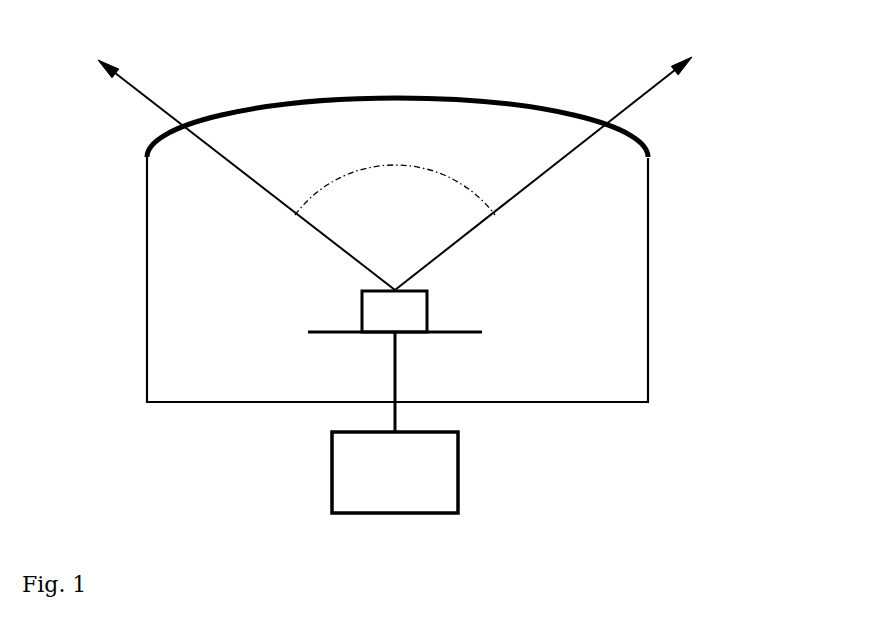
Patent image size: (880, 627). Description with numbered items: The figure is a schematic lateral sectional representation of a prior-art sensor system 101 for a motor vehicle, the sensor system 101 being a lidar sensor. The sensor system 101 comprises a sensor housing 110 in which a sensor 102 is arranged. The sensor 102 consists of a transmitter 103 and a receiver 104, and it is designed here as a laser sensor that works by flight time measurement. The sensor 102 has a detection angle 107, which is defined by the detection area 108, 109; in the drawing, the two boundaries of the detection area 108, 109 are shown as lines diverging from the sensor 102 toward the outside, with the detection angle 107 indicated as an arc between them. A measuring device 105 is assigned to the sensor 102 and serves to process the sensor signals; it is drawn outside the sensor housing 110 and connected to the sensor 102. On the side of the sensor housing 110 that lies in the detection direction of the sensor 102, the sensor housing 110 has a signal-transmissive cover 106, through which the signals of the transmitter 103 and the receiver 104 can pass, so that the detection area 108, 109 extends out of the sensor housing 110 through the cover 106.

The sensor system 101 is at (627, 318).
The sensor 102 is at (493, 332).
The transmitter 103 is at (326, 284).
The receiver 104 is at (347, 309).
The measuring device 105 is at (320, 422).
The signal-transmissive cover 106 is at (397, 93).
The detection angle 107 is at (451, 229).
The detection area 108 is at (222, 175).
The detection area 109 is at (565, 173).
The sensor housing 110 is at (349, 279).